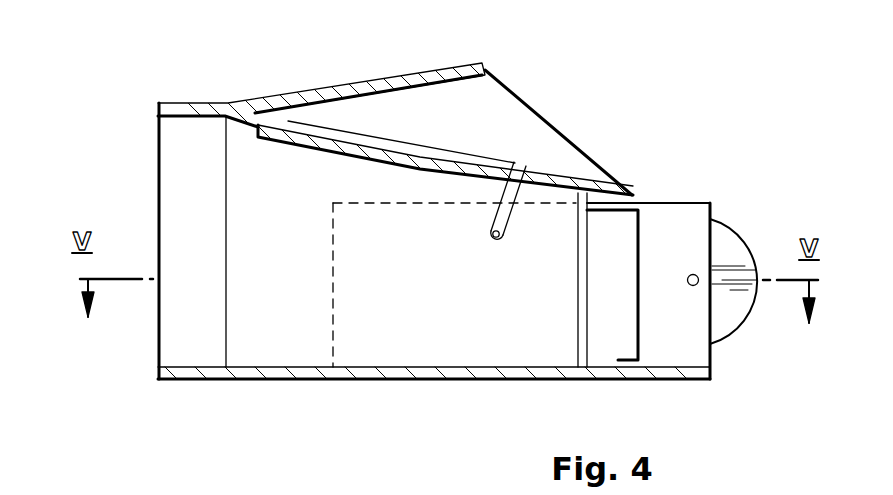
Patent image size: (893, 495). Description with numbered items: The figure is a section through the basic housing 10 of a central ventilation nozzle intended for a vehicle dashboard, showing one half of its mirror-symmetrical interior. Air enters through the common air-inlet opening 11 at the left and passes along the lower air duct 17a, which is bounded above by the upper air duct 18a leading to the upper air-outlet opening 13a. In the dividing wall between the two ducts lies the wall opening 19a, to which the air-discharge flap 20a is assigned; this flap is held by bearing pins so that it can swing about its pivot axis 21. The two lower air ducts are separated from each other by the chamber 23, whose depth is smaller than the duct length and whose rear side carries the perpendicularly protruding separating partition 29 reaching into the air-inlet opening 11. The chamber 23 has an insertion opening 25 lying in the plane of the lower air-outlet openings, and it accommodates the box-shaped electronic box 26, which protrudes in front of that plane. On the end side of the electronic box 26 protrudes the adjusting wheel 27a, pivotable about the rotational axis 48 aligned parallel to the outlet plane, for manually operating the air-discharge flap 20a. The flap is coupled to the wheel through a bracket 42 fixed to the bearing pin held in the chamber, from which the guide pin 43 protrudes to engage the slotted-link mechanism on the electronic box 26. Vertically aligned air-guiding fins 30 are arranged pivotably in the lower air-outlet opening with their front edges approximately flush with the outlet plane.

The basic housing 10 is at (260, 380).
The air-inlet opening 11 is at (152, 140).
The upper air-outlet opening 13a is at (525, 100).
The lower air duct 17a is at (248, 303).
The upper air duct 18a is at (432, 105).
The wall opening 19a is at (340, 133).
The air-discharge flap 20a is at (313, 138).
The pivot axis 21 is at (517, 153).
The chamber 23 is at (297, 297).
The insertion opening 25 is at (633, 193).
The electronic box 26 is at (668, 228).
The adjusting wheel 27a is at (730, 245).
The separating partition 29 is at (193, 305).
The air-guiding fins 30 is at (610, 355).
The bracket 42 is at (507, 222).
The guide pin 43 is at (493, 238).
The rotational axis 48 is at (697, 284).